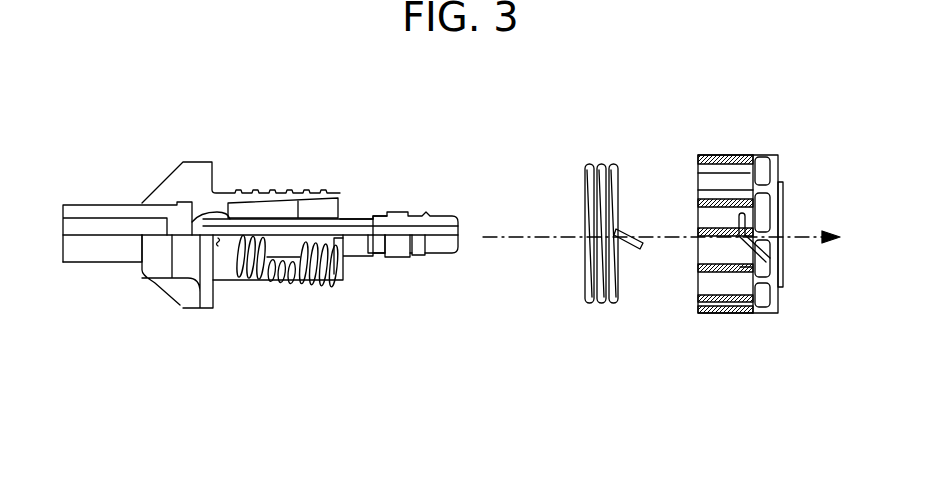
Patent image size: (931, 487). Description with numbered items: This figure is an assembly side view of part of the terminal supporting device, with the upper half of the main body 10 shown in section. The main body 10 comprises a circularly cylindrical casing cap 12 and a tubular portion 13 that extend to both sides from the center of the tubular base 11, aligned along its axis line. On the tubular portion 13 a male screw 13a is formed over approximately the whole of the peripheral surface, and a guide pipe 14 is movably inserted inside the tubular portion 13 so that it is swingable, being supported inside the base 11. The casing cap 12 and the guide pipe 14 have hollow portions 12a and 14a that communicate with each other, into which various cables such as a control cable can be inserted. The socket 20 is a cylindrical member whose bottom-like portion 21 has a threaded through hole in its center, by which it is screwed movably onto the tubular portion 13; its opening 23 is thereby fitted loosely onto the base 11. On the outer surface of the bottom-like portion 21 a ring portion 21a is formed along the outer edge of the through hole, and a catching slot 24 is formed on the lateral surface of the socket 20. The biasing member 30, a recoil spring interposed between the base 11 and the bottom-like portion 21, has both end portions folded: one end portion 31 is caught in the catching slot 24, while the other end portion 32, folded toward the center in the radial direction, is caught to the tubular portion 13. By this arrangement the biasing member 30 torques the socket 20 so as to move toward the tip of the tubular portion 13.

The main body 10 is at (306, 148).
The tubular base 11 is at (183, 303).
The casing cap 12 is at (100, 257).
The hollow portion 12a is at (102, 222).
The tubular portion 13 is at (340, 268).
The male screw 13a is at (298, 285).
The guide pipe 14 is at (437, 250).
The hollow portion 14a is at (377, 220).
The socket 20 is at (733, 133).
The bottom-like portion 21 is at (778, 162).
The ring portion 21a is at (783, 262).
The opening 23 is at (697, 180).
The catching slot 24 is at (755, 268).
The biasing member 30 is at (596, 142).
The one end portion 31 is at (643, 250).
The other end portion 32 is at (583, 233).